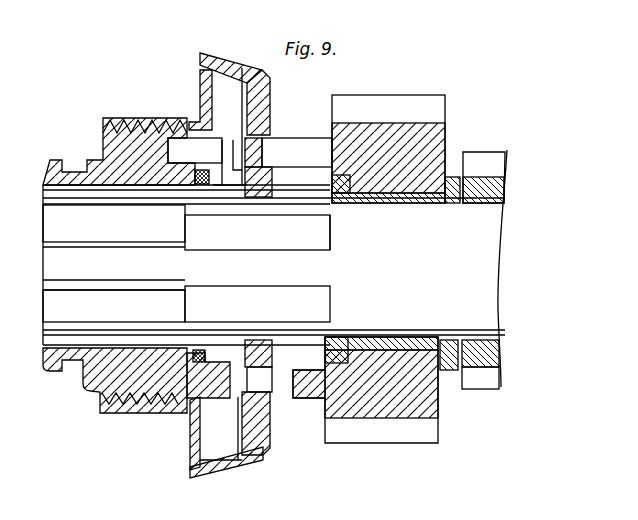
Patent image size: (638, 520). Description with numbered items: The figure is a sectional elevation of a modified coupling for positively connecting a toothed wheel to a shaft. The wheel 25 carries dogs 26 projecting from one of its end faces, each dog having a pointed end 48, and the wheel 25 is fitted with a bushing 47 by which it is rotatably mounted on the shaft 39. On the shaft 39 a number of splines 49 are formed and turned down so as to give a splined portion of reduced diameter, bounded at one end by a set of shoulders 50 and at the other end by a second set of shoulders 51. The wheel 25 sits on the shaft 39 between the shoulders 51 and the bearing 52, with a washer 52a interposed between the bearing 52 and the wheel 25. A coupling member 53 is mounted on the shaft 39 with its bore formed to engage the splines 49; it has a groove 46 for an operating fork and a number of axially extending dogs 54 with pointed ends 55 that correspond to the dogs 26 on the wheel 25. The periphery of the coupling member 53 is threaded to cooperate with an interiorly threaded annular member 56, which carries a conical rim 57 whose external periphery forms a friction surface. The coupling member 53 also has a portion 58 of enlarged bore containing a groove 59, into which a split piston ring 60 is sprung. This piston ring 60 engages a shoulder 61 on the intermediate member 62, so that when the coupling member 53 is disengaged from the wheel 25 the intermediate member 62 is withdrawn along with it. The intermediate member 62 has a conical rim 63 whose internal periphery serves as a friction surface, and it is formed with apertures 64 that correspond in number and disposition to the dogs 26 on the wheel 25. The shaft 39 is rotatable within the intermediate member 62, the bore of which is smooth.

The wheel 25 is at (430, 137).
The dogs 26 is at (293, 150).
The shaft 39 is at (481, 278).
The groove 46 is at (72, 368).
The bushing 47 is at (418, 204).
The pointed ends 48 is at (256, 148).
The splines 49 is at (114, 263).
The shoulders 50 is at (185, 231).
The shoulders 51 is at (329, 231).
The bearing 52 is at (483, 353).
The washer 52a is at (448, 372).
The coupling member 53 is at (97, 346).
The dogs 54 is at (195, 150).
The pointed ends 55 is at (225, 153).
The annular member 56 is at (141, 404).
The conical rim 57 is at (199, 72).
The portion of enlarged bore 58 is at (194, 352).
The groove 59 is at (193, 360).
The split piston ring 60 is at (197, 351).
The shoulder 61 is at (192, 186).
The intermediate member 62 is at (268, 352).
The conical rim 63 is at (224, 62).
The apertures 64 is at (262, 383).